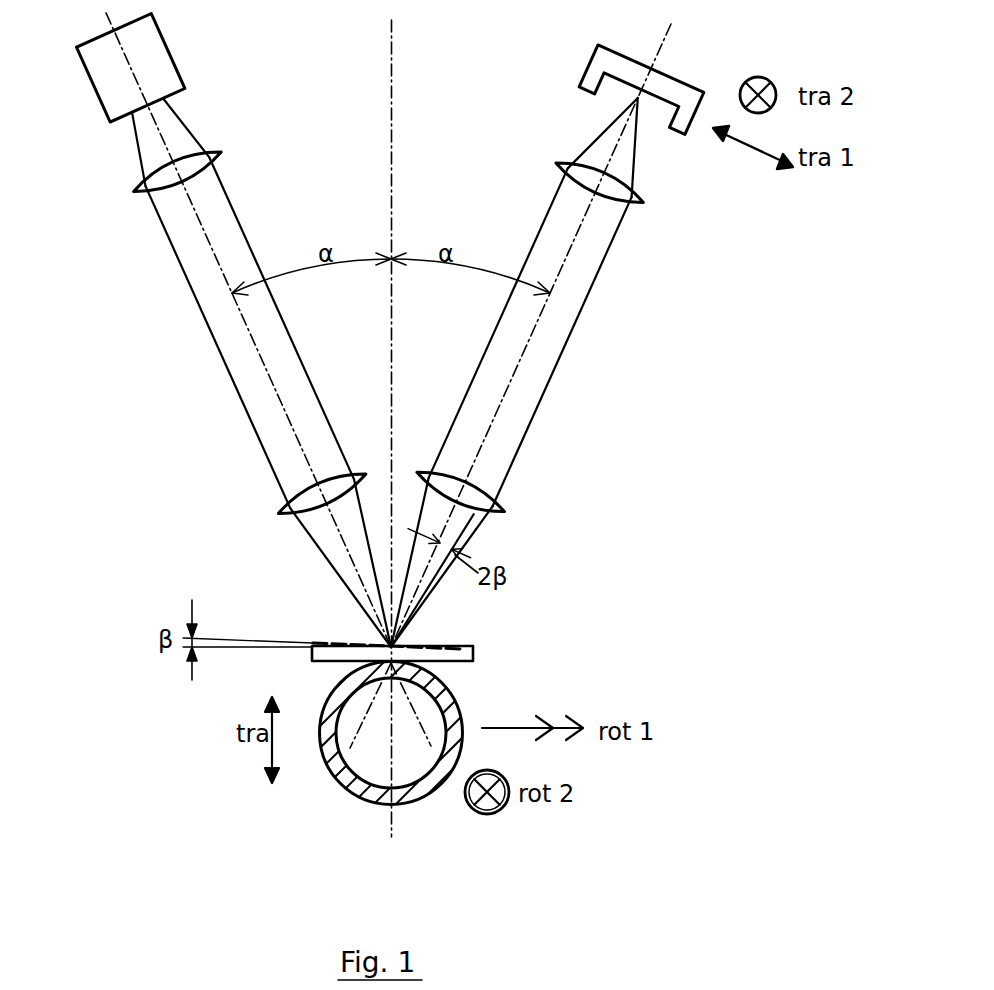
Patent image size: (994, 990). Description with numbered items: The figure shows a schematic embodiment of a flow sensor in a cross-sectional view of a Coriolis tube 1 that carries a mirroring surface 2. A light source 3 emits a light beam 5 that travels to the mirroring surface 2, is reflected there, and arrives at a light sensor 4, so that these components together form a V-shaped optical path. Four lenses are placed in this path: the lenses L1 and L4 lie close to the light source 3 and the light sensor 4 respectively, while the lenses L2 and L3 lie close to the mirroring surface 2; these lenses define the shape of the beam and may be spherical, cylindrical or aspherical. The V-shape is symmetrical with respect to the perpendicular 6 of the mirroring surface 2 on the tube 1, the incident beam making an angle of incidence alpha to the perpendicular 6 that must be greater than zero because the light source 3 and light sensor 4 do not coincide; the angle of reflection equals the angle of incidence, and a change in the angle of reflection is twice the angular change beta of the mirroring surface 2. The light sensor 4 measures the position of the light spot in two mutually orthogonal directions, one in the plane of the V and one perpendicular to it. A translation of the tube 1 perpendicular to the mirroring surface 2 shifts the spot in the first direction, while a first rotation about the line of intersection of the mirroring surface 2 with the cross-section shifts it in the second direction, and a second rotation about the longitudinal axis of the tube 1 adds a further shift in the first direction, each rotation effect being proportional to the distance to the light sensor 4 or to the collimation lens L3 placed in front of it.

The Coriolis tube 1 is at (403, 787).
The mirroring surface 2 is at (463, 648).
The light source 3 is at (145, 60).
The light sensor 4 is at (612, 63).
The light beam 5 is at (222, 305).
The perpendicular 6 is at (390, 147).
The lens L1 is at (150, 171).
The lens L2 is at (291, 499).
The lens L3 is at (491, 498).
The lens L4 is at (624, 184).